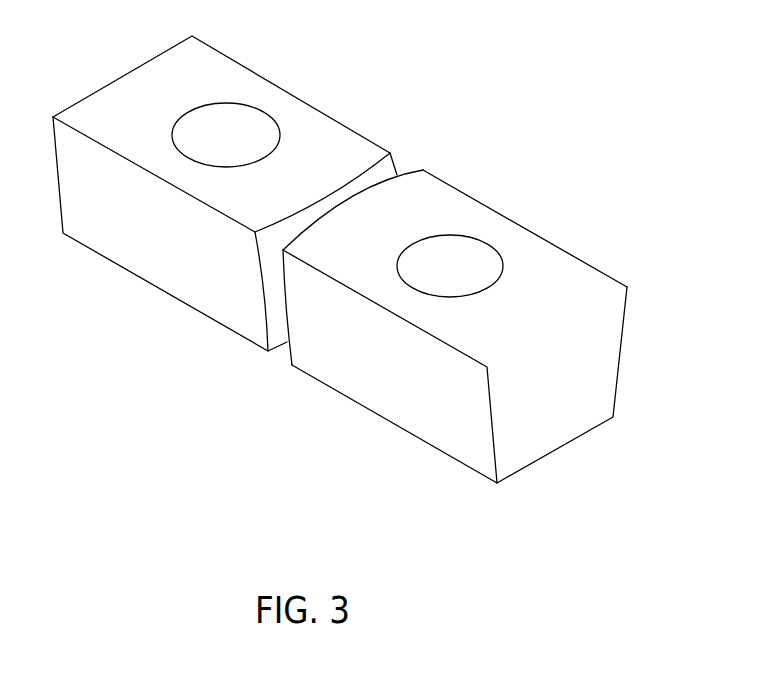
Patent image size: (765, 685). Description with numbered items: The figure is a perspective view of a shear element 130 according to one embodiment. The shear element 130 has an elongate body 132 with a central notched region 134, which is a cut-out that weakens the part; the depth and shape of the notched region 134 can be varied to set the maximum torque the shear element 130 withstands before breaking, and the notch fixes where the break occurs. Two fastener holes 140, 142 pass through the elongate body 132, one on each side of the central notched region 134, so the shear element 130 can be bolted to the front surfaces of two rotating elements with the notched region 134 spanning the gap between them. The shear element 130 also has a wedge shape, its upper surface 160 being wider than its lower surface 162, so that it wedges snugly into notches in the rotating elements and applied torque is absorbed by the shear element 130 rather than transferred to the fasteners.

The shear element 130 is at (563, 166).
The elongate body 132 is at (153, 255).
The central notched region 134 is at (404, 164).
The fastener hole 140 is at (208, 128).
The fastener hole 142 is at (432, 257).
The upper surface 160 is at (565, 278).
The lower surface 162 is at (562, 423).